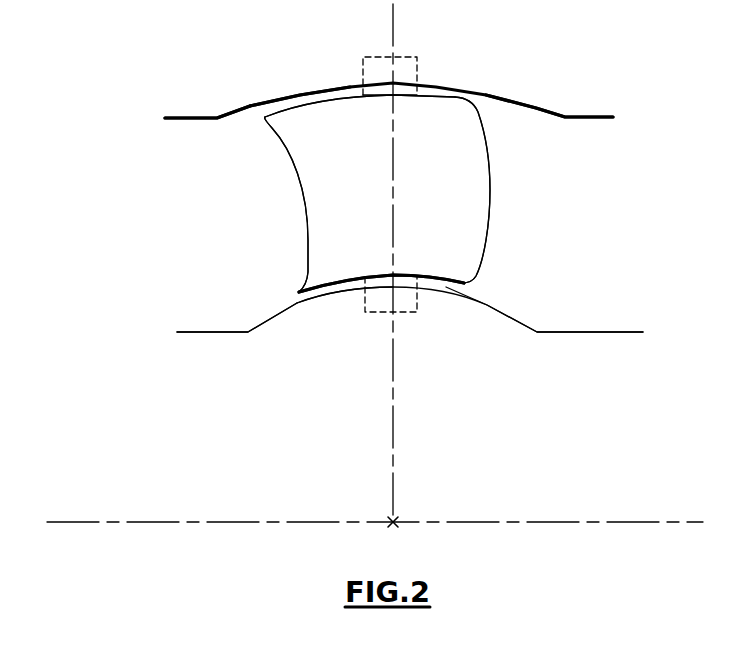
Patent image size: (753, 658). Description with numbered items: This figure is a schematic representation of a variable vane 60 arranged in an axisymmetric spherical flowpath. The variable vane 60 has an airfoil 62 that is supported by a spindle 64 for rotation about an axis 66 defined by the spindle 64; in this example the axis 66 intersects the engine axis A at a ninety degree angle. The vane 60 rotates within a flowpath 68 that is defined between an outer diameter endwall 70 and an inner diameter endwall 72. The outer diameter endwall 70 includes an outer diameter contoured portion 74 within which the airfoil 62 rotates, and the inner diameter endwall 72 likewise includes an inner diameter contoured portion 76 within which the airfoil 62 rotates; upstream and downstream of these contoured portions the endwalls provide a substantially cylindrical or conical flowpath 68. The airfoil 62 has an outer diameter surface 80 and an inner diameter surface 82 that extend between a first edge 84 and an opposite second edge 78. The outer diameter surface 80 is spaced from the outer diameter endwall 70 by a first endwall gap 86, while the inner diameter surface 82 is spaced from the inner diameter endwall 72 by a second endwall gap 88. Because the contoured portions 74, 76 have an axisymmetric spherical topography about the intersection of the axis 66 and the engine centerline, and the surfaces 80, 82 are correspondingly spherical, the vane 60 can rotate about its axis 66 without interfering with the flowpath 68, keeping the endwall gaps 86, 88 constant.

The variable vane 60 is at (517, 211).
The airfoil 62 is at (427, 193).
The spindle 64 is at (412, 57).
The axis 66 is at (395, 398).
The flowpath 68 is at (178, 165).
The outer diameter endwall 70 is at (197, 116).
The inner diameter endwall 72 is at (233, 334).
The outer diameter contoured portion 74 is at (539, 110).
The inner diameter contoured portion 76 is at (516, 320).
The second edge 78 is at (491, 162).
The outer diameter surface 80 is at (433, 98).
The inner diameter surface 82 is at (430, 277).
The first edge 84 is at (305, 105).
The first endwall gap 86 is at (298, 88).
The second endwall gap 88 is at (317, 255).
The engine axis A is at (603, 522).